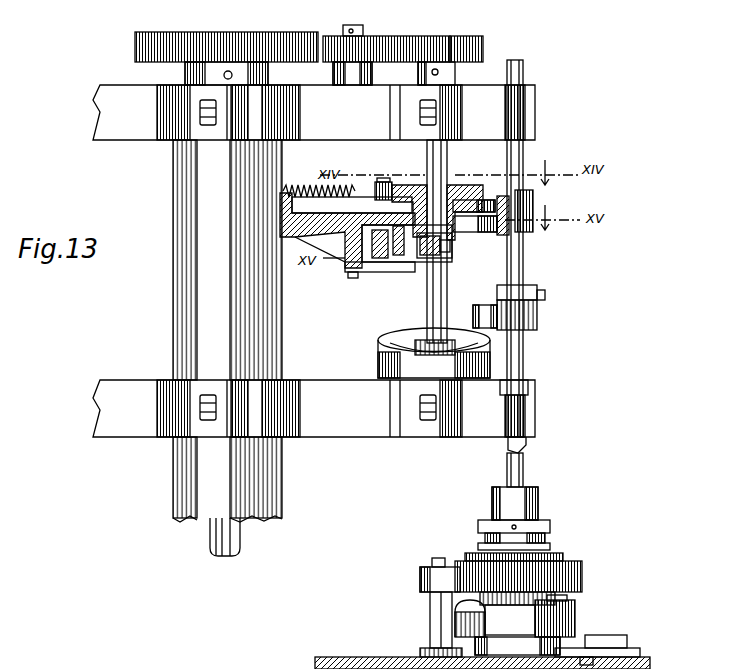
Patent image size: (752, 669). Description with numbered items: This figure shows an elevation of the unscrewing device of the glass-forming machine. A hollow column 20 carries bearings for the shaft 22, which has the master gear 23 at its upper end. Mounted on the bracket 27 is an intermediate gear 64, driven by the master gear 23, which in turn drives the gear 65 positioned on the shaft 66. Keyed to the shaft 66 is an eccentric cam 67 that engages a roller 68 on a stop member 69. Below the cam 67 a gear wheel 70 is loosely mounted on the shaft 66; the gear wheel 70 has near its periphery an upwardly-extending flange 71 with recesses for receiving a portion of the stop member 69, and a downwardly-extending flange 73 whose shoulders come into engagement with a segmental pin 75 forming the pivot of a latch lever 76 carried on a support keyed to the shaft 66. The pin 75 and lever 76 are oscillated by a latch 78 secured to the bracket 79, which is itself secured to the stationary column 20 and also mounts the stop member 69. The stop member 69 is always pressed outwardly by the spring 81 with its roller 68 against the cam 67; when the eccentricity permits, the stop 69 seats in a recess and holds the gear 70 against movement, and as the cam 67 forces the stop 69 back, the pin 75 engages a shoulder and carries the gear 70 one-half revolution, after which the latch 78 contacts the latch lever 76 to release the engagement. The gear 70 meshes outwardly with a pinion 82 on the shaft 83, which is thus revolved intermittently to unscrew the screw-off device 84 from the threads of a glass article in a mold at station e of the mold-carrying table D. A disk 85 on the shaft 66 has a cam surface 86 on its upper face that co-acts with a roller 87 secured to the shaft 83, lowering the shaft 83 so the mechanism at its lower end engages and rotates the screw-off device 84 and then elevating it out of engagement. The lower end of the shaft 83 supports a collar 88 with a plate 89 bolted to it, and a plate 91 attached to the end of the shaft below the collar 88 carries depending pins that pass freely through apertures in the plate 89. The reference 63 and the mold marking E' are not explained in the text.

The hollow column 20 is at (227, 331).
The shaft 22 is at (223, 540).
The master gear 23 is at (229, 38).
The bracket 27 is at (314, 112).
The shaft 63 is at (525, 473).
The intermediate gear 64 is at (372, 42).
The gear 65 is at (452, 42).
The shaft 66 is at (446, 158).
The eccentric cam 67 is at (405, 186).
The roller 68 is at (380, 182).
The stop member 69 is at (347, 230).
The gear wheel 70 is at (467, 226).
The upwardly-extending flange 71 is at (470, 207).
The downwardly-extending flange 73 is at (501, 233).
The segmental pin 75 is at (358, 240).
The latch lever 76 is at (395, 263).
The latch 78 is at (405, 257).
The bracket 79 is at (338, 248).
The spring 81 is at (300, 186).
The pinion 82 is at (526, 207).
The shaft 83 is at (524, 274).
The screw-off device 84 is at (574, 552).
The disk 85 is at (392, 359).
The cam surface 86 is at (382, 333).
The roller 87 is at (480, 313).
The collar 88 is at (540, 503).
The plate 89 is at (441, 593).
The plate 91 is at (477, 522).
The coupling E' is at (533, 625).
The mold-carrying table D is at (341, 660).
The station e is at (604, 650).